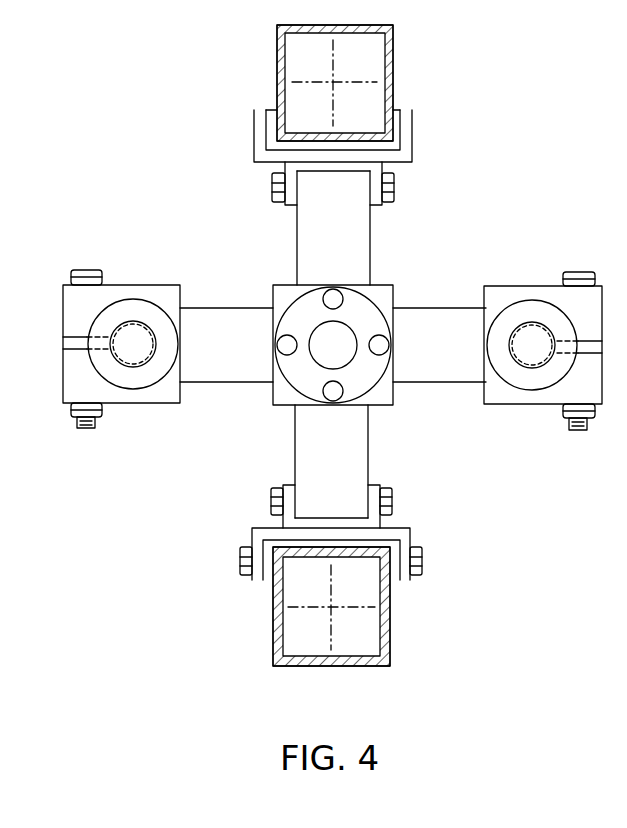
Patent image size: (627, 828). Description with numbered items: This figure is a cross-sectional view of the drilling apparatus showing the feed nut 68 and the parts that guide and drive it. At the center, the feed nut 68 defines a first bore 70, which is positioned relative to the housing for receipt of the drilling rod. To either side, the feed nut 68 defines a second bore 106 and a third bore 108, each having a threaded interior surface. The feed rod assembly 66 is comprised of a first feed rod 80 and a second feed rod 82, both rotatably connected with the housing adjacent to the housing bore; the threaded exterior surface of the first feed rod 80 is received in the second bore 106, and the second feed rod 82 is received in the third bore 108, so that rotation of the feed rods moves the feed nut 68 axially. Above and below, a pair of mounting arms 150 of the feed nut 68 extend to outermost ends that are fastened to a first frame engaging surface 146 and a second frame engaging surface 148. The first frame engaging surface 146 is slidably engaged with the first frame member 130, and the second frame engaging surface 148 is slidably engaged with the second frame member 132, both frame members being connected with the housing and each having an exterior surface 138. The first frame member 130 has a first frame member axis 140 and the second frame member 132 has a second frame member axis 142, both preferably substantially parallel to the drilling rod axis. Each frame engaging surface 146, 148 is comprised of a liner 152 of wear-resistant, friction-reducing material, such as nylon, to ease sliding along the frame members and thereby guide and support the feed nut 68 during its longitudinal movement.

The feed rod assembly 66 is at (172, 236).
The feed nut 68 is at (384, 397).
The first bore 70 is at (352, 331).
The first feed rod 80 is at (133, 347).
The second feed rod 82 is at (532, 348).
The second bore 106 is at (134, 313).
The third bore 108 is at (532, 318).
The first frame member 130 is at (394, 50).
The second frame member 132 is at (390, 638).
The exterior surface 138 is at (394, 88).
The first frame member axis 140 is at (333, 82).
The second frame member axis 142 is at (331, 607).
The first frame engaging surface 146 is at (410, 156).
The second frame engaging surface 148 is at (403, 571).
The mounting arm 150 is at (340, 244).
The liner 152 is at (270, 130).